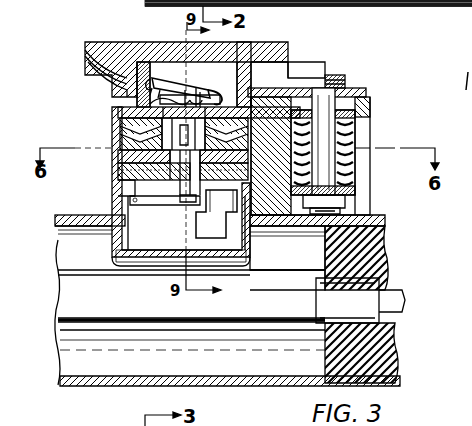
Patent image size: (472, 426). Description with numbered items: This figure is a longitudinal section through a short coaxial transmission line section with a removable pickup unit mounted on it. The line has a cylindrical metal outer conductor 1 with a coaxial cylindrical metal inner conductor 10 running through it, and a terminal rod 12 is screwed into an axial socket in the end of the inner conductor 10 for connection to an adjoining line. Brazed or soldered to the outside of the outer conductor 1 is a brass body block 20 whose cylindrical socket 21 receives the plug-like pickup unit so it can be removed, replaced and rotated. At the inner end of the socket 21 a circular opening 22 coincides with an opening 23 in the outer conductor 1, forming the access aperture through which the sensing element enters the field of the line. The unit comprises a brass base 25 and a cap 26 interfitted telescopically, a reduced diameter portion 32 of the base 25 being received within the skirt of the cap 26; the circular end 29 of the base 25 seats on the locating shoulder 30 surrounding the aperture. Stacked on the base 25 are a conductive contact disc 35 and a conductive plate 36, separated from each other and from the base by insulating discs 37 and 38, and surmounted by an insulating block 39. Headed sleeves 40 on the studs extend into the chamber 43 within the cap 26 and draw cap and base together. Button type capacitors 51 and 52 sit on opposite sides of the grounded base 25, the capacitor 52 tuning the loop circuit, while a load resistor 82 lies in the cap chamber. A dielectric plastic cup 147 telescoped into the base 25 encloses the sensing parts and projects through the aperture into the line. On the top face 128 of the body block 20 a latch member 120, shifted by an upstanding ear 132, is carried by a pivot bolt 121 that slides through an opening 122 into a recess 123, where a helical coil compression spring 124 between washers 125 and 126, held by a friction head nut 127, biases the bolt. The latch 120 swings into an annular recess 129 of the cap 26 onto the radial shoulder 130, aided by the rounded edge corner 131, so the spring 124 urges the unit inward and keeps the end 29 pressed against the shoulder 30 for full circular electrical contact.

The metal outer conductor 1 is at (385, 222).
The inner conductor 10 is at (292, 322).
The terminal rod 12 is at (395, 326).
The body block 20 is at (112, 425).
The cylindrical socket 21 is at (278, 230).
The circular opening 22 is at (135, 204).
The opening 23 is at (130, 228).
The base 25 is at (112, 198).
The cap 26 is at (88, 44).
The circular end 29 is at (118, 181).
The locating shoulder 30 is at (112, 205).
The reduced diameter portion 32 is at (118, 172).
The contact disc 35 is at (118, 150).
The conductive plate 36 is at (118, 128).
The insulating disc 37 is at (118, 140).
The insulating disc 38 is at (118, 156).
The insulating block 39 is at (118, 108).
The headed sleeve 40 is at (178, 70).
The chamber 43 is at (150, 78).
The button type capacitor 51 is at (197, 224).
The button type capacitor 52 is at (194, 202).
The load resistor 82 is at (215, 95).
The latch member 120 is at (370, 96).
The pivot bolt 121 is at (343, 88).
The opening 122 is at (340, 80).
The recess 123 is at (356, 195).
The helical coil compression spring 124 is at (352, 130).
The washer 125 is at (348, 120).
The washer 126 is at (356, 190).
The friction head nut 127 is at (350, 209).
The top face 128 is at (300, 90).
The annular recess 129 is at (105, 72).
The radial shoulder 130 is at (112, 84).
The rounded edge corner 131 is at (112, 91).
The upstanding ear 132 is at (300, 62).
The plastic cup 147 is at (250, 270).